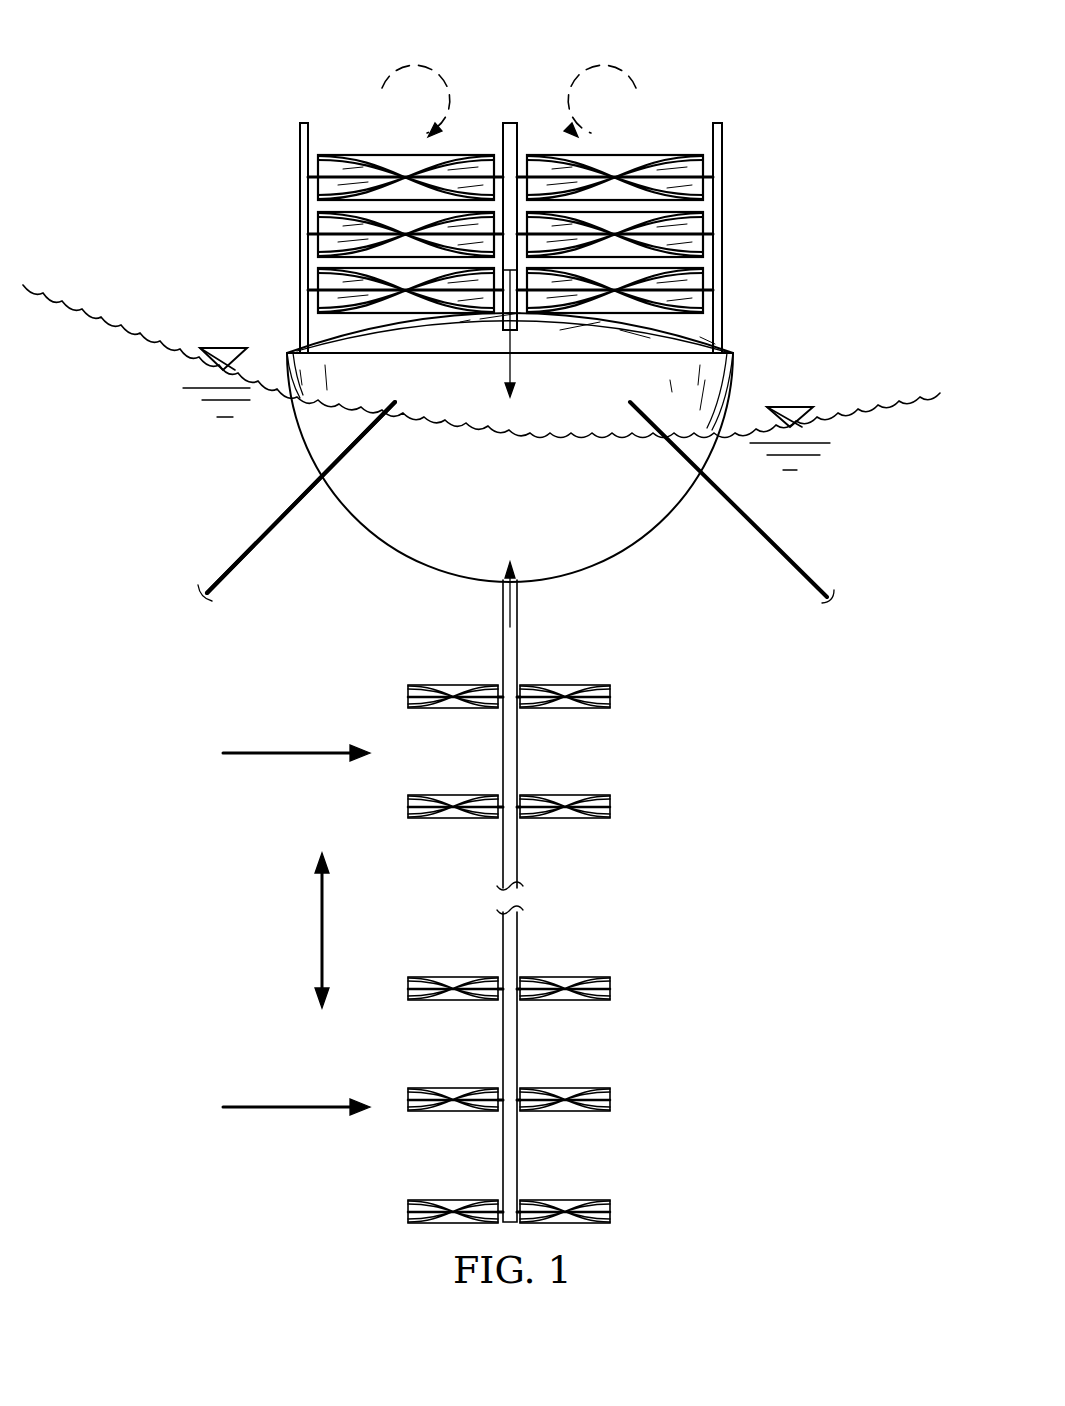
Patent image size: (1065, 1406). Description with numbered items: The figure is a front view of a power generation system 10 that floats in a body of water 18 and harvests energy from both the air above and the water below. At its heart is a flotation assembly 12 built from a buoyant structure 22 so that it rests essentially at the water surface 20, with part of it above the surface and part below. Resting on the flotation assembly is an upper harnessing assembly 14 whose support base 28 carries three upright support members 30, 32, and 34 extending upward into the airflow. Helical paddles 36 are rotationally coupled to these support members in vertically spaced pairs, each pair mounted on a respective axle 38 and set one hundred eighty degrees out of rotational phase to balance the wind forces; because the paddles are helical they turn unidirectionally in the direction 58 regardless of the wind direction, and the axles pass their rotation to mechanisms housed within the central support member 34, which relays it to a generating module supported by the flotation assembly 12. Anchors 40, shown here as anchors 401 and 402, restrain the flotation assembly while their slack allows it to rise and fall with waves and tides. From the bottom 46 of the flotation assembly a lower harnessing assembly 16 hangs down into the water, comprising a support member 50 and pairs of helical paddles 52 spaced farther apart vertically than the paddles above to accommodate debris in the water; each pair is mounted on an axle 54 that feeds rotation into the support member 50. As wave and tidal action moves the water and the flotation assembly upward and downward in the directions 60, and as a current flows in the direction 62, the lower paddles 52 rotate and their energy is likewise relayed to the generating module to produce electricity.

The power generation system 10 is at (168, 50).
The flotation assembly 12 is at (496, 457).
The harnessing assembly 14 is at (549, 205).
The harnessing assembly 16 is at (420, 902).
The body of water 18 is at (102, 834).
The water surface 20 is at (117, 320).
The buoyant structure 22 is at (722, 393).
The support base 28 is at (695, 332).
The support member 30 is at (300, 152).
The support member 32 is at (722, 152).
The support member 34 is at (510, 123).
The paddles 36 is at (345, 155).
The axle 38 is at (522, 160).
The anchors 40 is at (520, 507).
The anchor 401 is at (732, 502).
The anchor 402 is at (250, 548).
The bottom 46 is at (381, 536).
The support member 50 is at (518, 638).
The paddles 52 is at (408, 692).
The axle 54 is at (518, 812).
The direction 58 is at (410, 65).
The directions 60 is at (322, 935).
The direction 62 is at (287, 753).